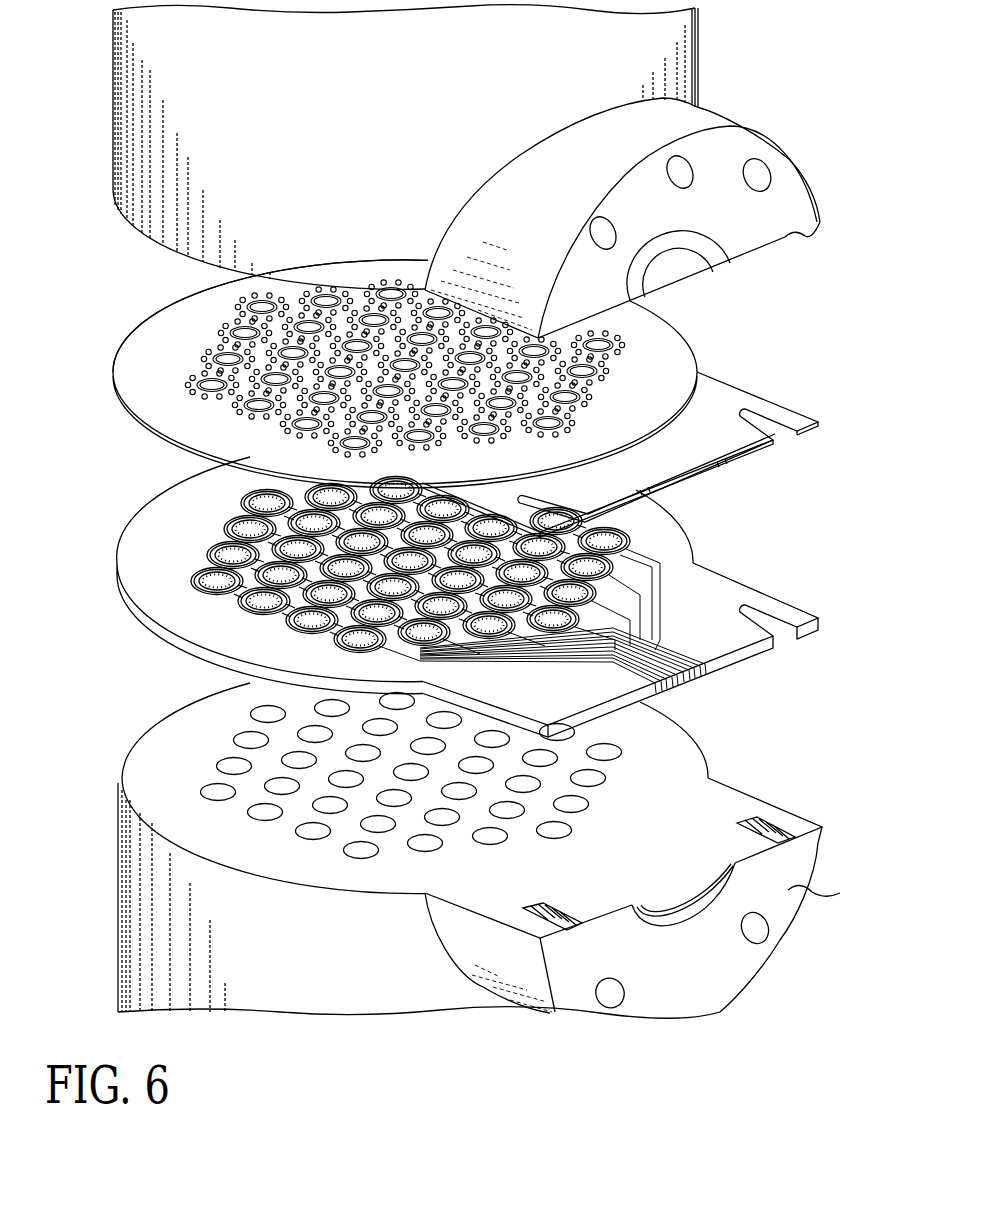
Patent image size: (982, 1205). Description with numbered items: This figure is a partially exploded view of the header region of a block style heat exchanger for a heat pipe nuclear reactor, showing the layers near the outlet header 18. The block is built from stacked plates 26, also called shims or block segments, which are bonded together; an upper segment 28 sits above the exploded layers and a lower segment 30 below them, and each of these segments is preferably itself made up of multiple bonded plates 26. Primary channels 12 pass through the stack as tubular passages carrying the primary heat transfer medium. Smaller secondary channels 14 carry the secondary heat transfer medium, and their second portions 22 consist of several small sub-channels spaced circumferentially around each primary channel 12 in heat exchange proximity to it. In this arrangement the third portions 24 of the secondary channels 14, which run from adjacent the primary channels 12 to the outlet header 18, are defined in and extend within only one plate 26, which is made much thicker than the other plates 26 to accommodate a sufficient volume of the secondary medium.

The primary channels 12 is at (212, 380).
The secondary channels 14 is at (640, 493).
The outlet header 18 is at (805, 190).
The second portions 22 is at (235, 408).
The third portions 24 is at (667, 607).
The plates 26 is at (687, 323).
The upper segment 28 is at (130, 200).
The lower segment 30 is at (117, 880).